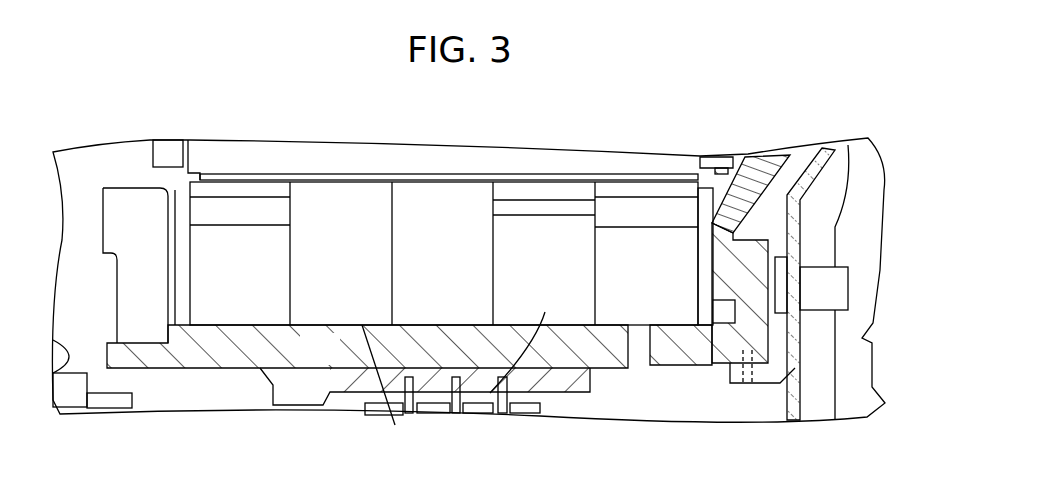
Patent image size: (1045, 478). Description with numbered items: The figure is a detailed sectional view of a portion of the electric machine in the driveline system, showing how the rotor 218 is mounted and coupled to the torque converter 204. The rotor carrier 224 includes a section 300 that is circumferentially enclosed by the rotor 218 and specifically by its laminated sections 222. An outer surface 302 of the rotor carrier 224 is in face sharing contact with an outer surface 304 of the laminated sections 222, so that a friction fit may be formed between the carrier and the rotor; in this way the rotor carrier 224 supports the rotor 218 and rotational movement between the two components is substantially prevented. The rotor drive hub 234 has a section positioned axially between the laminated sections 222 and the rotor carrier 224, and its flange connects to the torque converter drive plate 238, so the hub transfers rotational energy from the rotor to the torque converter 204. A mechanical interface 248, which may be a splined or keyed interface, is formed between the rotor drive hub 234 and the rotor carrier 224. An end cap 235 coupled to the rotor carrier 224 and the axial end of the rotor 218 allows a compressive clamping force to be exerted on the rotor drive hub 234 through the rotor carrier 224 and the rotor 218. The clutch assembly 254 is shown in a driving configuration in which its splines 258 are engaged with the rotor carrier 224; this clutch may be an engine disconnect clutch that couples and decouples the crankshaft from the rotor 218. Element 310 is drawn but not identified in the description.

The torque converter 204 is at (853, 233).
The rotor 218 is at (160, 182).
The laminated rotor sections 222 is at (378, 198).
The rotor carrier 224 is at (248, 386).
The rotor drive hub 234 is at (740, 156).
The end cap 235 is at (152, 236).
The torque converter drive plate 238 is at (835, 162).
The mechanical interface 248 is at (752, 320).
The clutch assembly 254 is at (560, 405).
The splines 258 is at (525, 338).
The section of the rotor carrier 300 is at (335, 364).
The outer surface of the rotor carrier 302 is at (408, 325).
The outer surface of the laminated sections 304 is at (386, 393).
The bottom block 310 is at (790, 352).